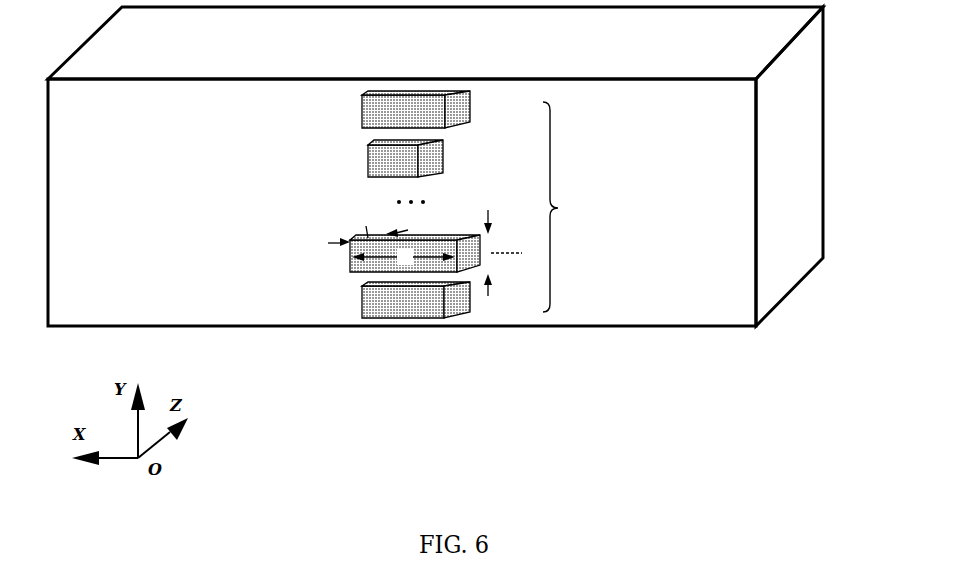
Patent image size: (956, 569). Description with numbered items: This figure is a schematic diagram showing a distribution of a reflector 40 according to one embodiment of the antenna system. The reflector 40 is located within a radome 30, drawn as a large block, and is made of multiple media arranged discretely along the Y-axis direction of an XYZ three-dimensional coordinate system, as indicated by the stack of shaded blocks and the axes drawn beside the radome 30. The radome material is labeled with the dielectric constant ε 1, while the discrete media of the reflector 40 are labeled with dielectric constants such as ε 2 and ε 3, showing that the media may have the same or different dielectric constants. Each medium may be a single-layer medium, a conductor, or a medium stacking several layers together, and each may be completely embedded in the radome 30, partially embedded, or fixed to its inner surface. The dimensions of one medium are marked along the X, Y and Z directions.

The radome 30 is at (440, 234).
The reflector 40 is at (482, 253).
The dielectric region epsilon-1 (substrate material) 1 is at (670, 245).
The dielectric block epsilon- 2 is at (416, 109).
The dielectric block epsilon- 3 is at (405, 158).